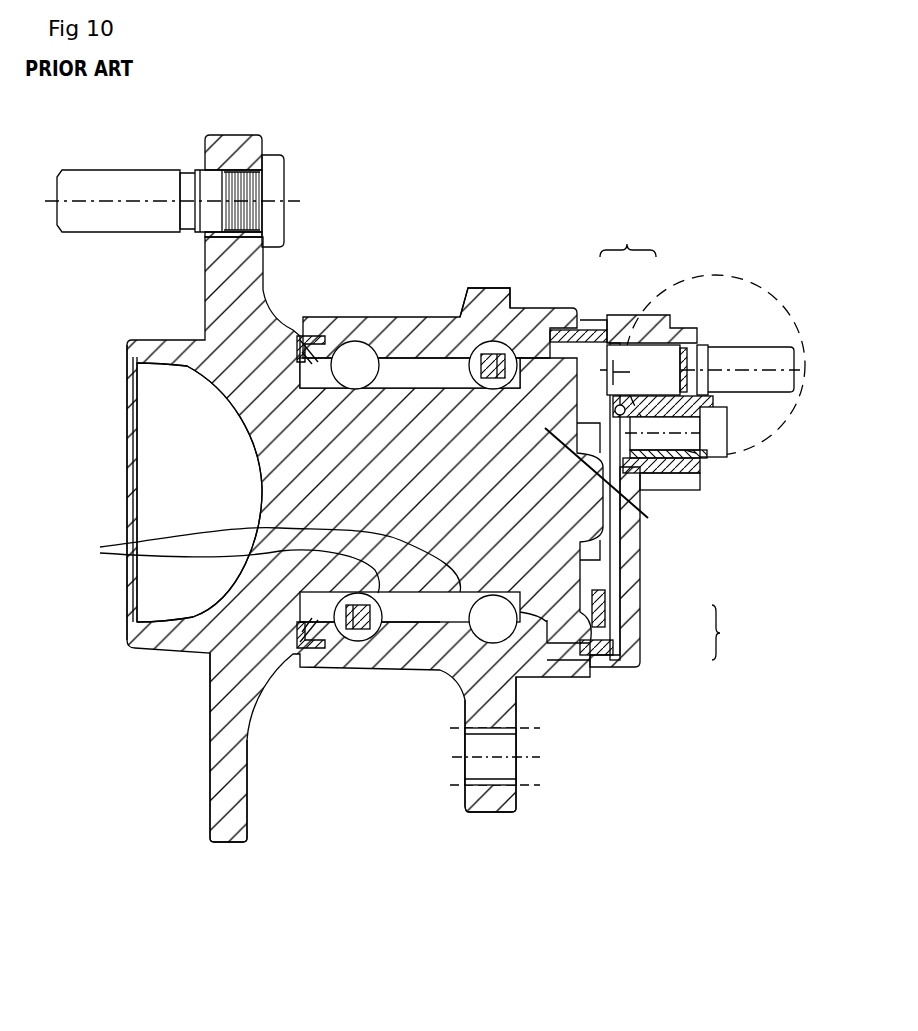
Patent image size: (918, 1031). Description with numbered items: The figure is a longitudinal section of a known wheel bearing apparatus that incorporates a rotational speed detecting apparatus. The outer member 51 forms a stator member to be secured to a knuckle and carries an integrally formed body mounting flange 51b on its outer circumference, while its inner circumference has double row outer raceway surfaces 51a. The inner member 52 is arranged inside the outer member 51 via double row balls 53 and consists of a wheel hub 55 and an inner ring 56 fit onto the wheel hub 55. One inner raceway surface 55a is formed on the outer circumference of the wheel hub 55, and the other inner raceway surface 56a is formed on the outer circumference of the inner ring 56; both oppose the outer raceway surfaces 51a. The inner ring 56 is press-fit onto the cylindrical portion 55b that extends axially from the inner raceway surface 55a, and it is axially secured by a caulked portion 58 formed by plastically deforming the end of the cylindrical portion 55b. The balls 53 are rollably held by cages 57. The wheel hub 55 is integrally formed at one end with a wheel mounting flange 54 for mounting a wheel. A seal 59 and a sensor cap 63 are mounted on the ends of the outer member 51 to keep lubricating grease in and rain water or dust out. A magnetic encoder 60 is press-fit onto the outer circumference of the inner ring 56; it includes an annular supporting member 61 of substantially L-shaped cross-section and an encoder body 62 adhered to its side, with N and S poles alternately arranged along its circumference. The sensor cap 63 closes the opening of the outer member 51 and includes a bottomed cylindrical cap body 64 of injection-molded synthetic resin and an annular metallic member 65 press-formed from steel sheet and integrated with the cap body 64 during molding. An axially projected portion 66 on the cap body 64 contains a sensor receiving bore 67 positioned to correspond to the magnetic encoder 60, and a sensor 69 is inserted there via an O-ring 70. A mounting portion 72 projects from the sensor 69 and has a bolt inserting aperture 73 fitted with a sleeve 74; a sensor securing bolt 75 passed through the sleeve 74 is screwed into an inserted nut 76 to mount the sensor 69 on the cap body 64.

The outer member 51 is at (425, 322).
The outer raceway surface 51a is at (360, 356).
The body mounting flange 51b is at (492, 802).
The inner member 52 is at (229, 437).
The balls 53 is at (487, 630).
The wheel mounting flange 54 is at (242, 150).
The wheel hub 55 is at (236, 375).
The inner raceway surface 55a is at (330, 338).
The cylindrical portion 55b is at (616, 484).
The inner ring 56 is at (522, 577).
The inner raceway surface 56a is at (472, 350).
The cage 57 is at (262, 560).
The caulked portion 58 is at (625, 562).
The seal 59 is at (212, 677).
The magnetic encoder 60 is at (732, 632).
The annular supporting member 61 is at (605, 645).
The encoder body 62 is at (605, 608).
The sensor cap 63 is at (628, 238).
The cap body 64 is at (655, 330).
The annular metallic member 65 is at (603, 318).
The axially projected portion 66 is at (690, 474).
The sensor receiving bore 67 is at (684, 346).
The sensor 69 is at (749, 333).
The O-ring 70 is at (698, 402).
The mounting portion 72 is at (703, 345).
The bolt inserting aperture 73 is at (702, 434).
The sleeve 74 is at (705, 460).
The sensor securing bolt 75 is at (728, 455).
The inserted nut 76 is at (648, 472).